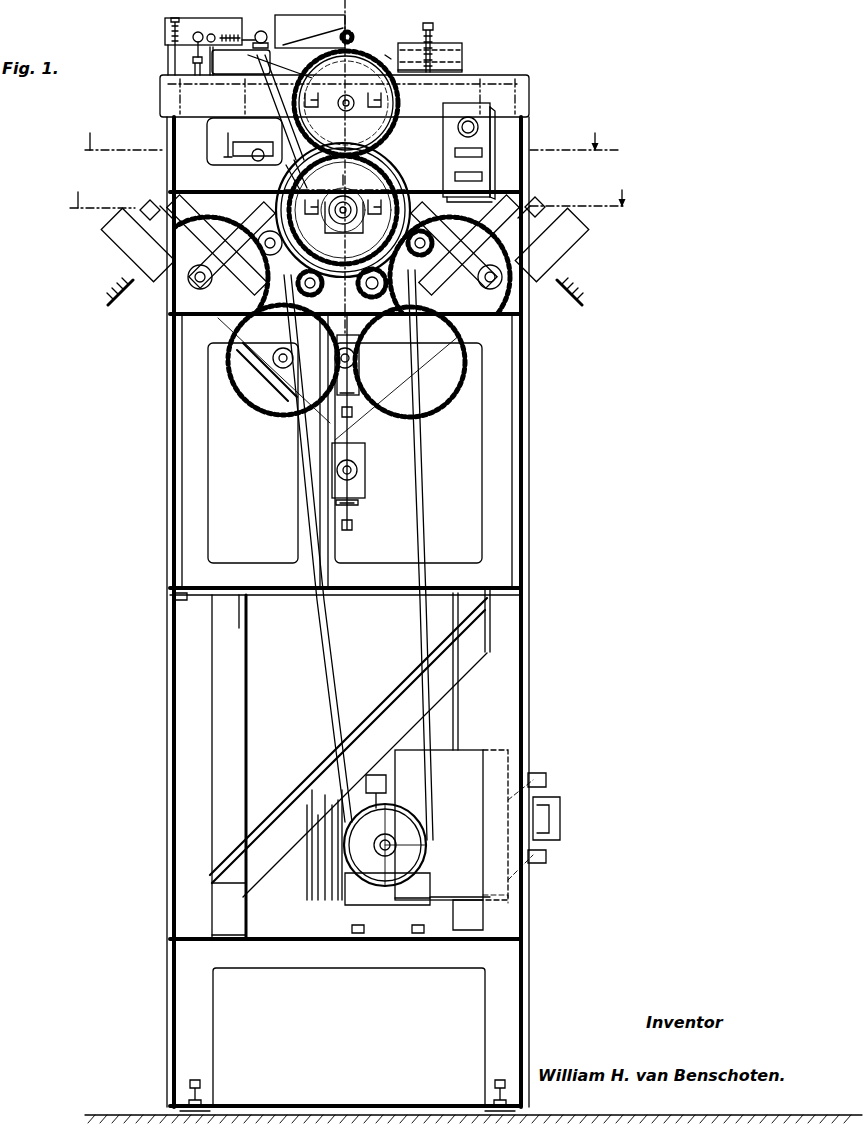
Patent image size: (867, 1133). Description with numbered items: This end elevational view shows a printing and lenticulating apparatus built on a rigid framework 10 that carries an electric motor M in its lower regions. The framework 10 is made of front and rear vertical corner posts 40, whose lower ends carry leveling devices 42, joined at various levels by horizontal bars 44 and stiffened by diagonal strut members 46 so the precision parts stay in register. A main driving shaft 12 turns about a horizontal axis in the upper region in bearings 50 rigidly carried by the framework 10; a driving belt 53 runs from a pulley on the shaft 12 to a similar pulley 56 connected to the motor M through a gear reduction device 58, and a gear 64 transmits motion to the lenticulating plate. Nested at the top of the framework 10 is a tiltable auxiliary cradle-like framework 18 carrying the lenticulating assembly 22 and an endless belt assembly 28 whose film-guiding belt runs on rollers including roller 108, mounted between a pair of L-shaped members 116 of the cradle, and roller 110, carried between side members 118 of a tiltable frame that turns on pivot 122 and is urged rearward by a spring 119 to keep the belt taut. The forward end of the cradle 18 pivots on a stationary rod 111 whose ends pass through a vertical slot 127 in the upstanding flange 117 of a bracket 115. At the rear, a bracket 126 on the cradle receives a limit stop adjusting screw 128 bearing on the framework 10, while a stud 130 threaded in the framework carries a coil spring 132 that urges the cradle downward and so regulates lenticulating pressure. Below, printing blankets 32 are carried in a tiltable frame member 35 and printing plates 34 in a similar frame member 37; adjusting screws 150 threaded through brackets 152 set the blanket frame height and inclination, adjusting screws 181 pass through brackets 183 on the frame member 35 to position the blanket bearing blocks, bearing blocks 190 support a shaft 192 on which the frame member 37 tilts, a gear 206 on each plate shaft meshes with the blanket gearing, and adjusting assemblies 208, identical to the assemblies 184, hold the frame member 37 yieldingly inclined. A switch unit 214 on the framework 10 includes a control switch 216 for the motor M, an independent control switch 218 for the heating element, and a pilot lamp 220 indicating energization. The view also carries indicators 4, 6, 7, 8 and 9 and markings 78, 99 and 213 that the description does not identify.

The framework 10 is at (530, 529).
The vertical corner posts 40 is at (508, 703).
The leveling devices 42 is at (204, 1087).
The horizontal bars 44 is at (210, 338).
The diagonal strut members 46 is at (302, 546).
The bearings 50 is at (343, 210).
The driving belt 53 is at (418, 449).
The pulley 56 is at (407, 845).
The gear reduction device 58 is at (390, 900).
The electric motor M is at (463, 840).
The section line 4- 4 is at (337, 146).
The section line 9- 9 is at (347, 191).
The view arrow 8 is at (122, 346).
The view arrow 7 is at (250, 305).
The view arrow 6 is at (357, 4).
The main driving shaft 12 is at (343, 204).
The auxiliary cradle-like framework 18 is at (391, 57).
The lenticulating assembly 22 is at (343, 245).
The endless belt assembly 28 is at (347, 28).
The printing blankets 32 is at (409, 199).
The printing plates 34 is at (436, 408).
The offset blanket supporting frame member 35 is at (483, 284).
The plate assembly carrying frame member 37 is at (569, 257).
The gear 64 is at (292, 189).
The pinion 78 is at (390, 261).
The spring housing 99 is at (120, 248).
The roller 108 is at (349, 38).
The roller 110 is at (262, 105).
The stationary rod 111 is at (456, 55).
The bracket 115 is at (455, 69).
The L-shaped members 116 is at (313, 24).
The upstanding flange 117 is at (455, 46).
The side members 118 is at (263, 128).
The spring 119 is at (215, 35).
The pivot 122 is at (252, 155).
The bracket 126 is at (192, 27).
The vertical slot 127 is at (432, 37).
The limit stop adjusting screw 128 is at (196, 63).
The stud 130 is at (198, 53).
The coil spring 132 is at (172, 33).
The adjusting screws 150 is at (372, 414).
The brackets 152 is at (355, 505).
The adjusting screws 181 is at (570, 209).
The brackets 183 is at (110, 241).
The adjusting assemblies 184 is at (154, 209).
The bearing blocks 190 is at (361, 489).
The shaft 192 is at (358, 471).
The gear 206 is at (163, 307).
The adjusting assemblies 208 is at (128, 276).
The control box 213 is at (469, 152).
The switch unit 214 is at (457, 143).
The control switch 216 is at (455, 176).
The independent control switch 218 is at (455, 153).
The pilot lamp 220 is at (458, 127).